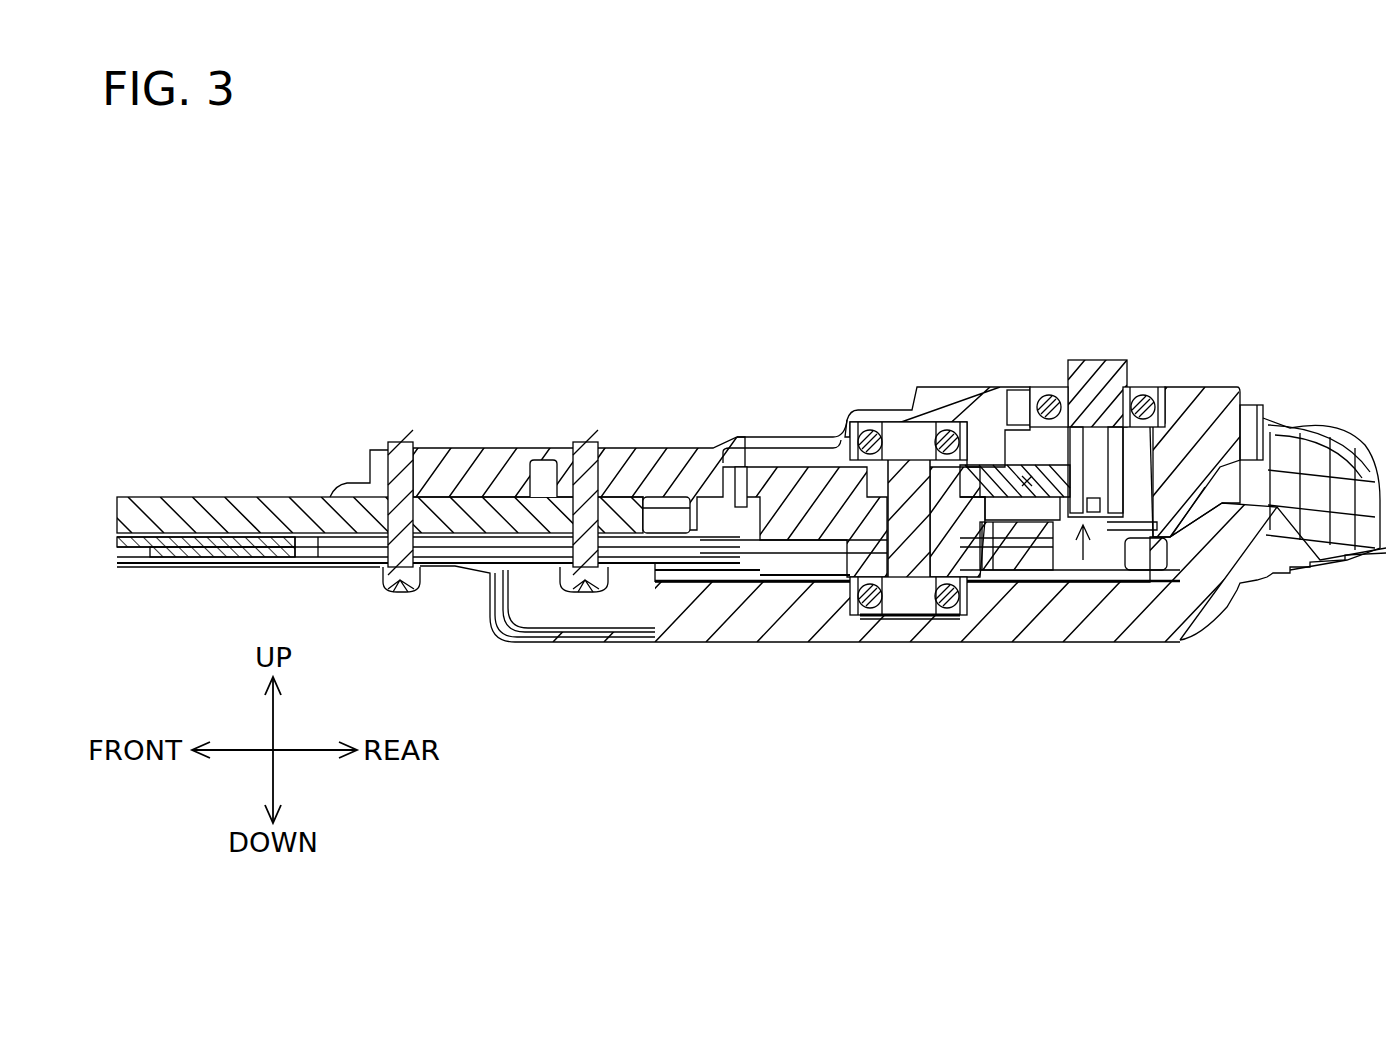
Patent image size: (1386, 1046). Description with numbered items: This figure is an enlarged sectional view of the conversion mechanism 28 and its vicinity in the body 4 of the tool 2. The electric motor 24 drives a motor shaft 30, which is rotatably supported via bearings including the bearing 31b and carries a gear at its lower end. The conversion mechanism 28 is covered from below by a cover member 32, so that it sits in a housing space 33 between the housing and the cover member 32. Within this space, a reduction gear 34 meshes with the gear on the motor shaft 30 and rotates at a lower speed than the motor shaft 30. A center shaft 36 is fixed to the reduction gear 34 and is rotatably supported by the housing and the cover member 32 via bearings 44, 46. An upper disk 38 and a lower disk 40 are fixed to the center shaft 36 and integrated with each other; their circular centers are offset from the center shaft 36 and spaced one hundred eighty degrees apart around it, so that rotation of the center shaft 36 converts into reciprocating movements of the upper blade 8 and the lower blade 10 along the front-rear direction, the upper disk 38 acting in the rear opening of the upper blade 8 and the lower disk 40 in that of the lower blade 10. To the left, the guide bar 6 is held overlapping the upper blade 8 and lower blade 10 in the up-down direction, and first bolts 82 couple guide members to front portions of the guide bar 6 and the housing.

The motor unit assembly 2 is at (903, 509).
The body 4 is at (828, 380).
The guide bar 6 is at (218, 500).
The upper blade 8 is at (188, 543).
The lower blade 10 is at (247, 552).
The electric motor 24 is at (1050, 360).
The conversion mechanism 28 is at (1100, 577).
The motor shaft 30 is at (1102, 365).
The bearing 31b is at (1138, 407).
The cover member 32 is at (1163, 630).
The housing space 33 is at (1028, 493).
The reduction gear 34 is at (788, 507).
The center shaft 36 is at (910, 580).
The upper disk 38 is at (850, 522).
The lower disk 40 is at (873, 603).
The bearing 44 is at (870, 423).
The bearing 46 is at (950, 590).
The first bolts 82 is at (413, 592).